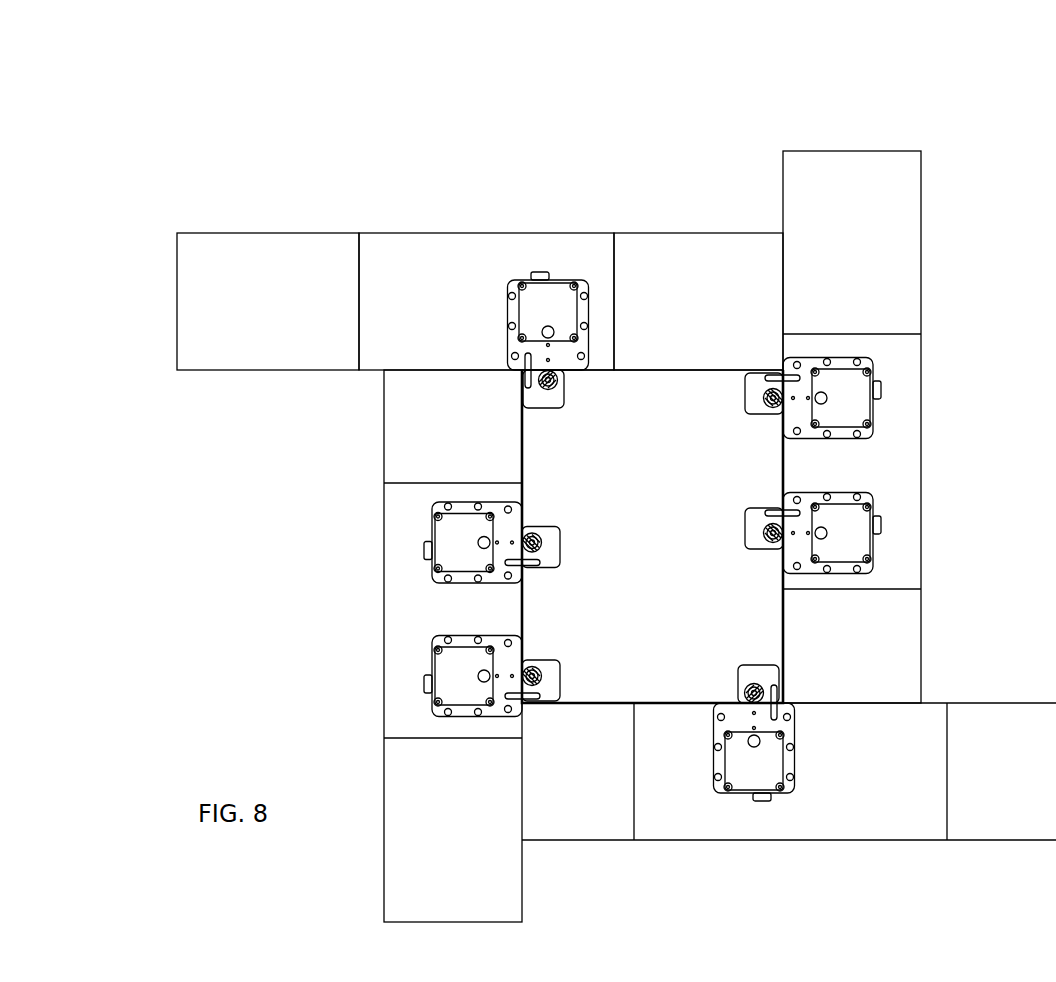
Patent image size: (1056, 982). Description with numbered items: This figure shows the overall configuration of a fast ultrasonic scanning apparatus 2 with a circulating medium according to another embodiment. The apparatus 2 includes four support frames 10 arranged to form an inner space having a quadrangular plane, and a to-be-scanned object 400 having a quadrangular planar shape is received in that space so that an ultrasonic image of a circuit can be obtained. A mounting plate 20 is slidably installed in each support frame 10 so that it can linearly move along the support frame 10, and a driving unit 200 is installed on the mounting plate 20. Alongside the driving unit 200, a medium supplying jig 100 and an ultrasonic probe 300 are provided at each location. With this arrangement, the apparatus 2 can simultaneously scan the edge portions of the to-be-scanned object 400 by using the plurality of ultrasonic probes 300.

The fast ultrasonic scanning apparatus 2 is at (899, 90).
The support frame 10 is at (724, 234).
The mounting plate 20 is at (568, 243).
The medium supplying jig 100 is at (748, 531).
The driving unit 200 is at (872, 495).
The ultrasonic probe 300 is at (768, 543).
The to-be-scanned object 400 is at (613, 673).